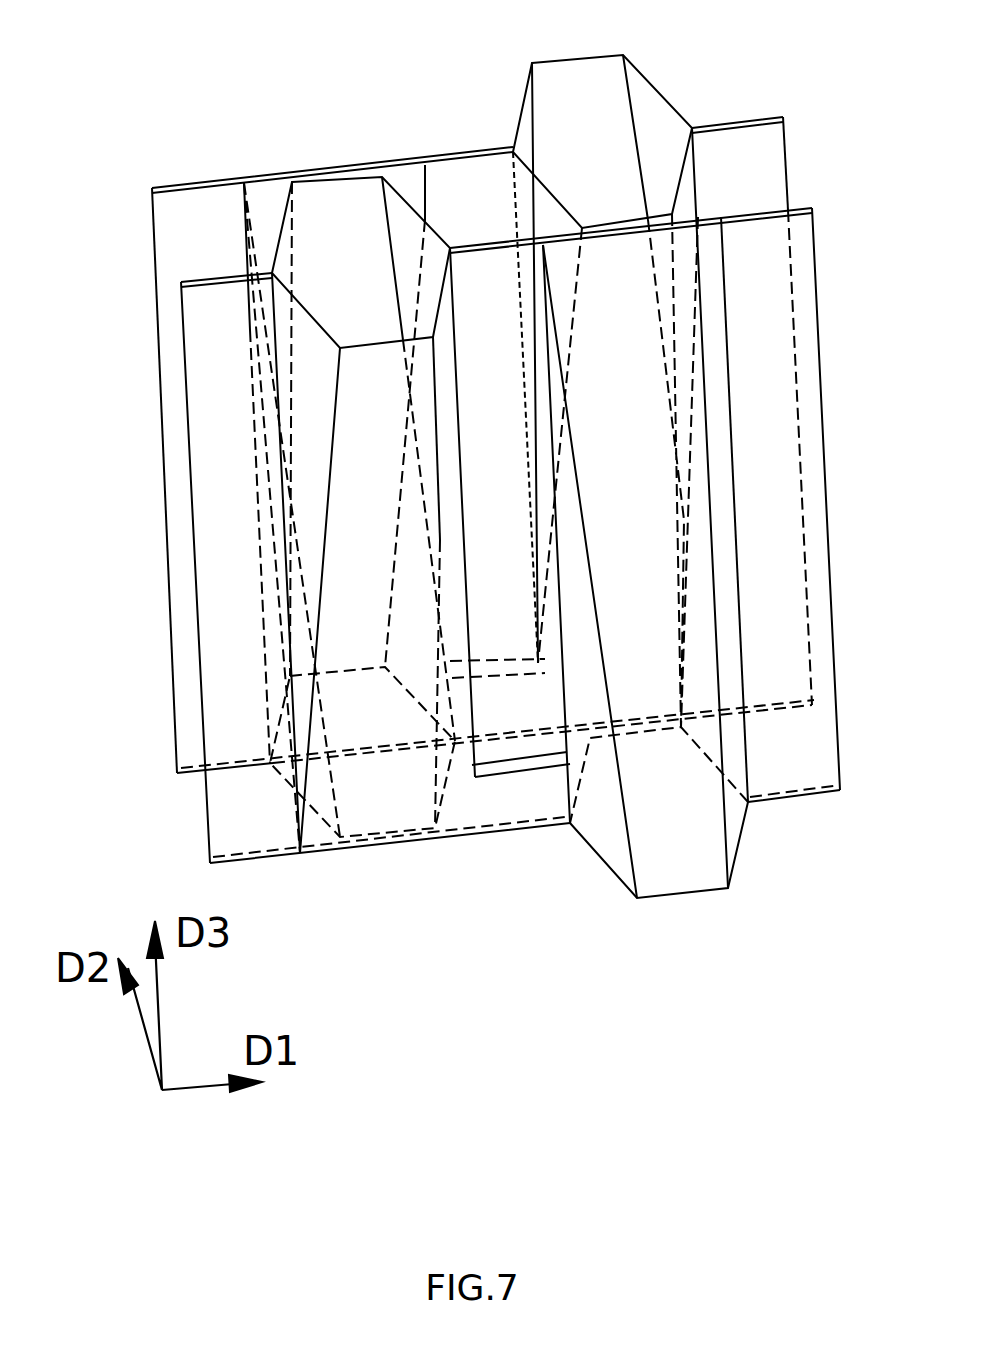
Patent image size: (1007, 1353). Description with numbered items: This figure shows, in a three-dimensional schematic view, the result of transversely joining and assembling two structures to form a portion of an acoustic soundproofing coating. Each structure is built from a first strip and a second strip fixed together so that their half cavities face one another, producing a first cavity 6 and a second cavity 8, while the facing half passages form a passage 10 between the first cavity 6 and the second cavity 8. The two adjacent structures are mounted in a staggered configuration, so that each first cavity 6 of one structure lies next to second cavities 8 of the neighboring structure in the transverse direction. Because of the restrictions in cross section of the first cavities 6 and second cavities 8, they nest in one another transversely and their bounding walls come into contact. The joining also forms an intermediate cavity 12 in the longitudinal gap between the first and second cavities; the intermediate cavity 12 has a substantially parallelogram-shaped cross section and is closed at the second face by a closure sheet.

The first cavity 6 is at (337, 215).
The second cavity 8 is at (370, 783).
The passage 10 is at (523, 792).
The intermediate cavity 12 is at (474, 185).